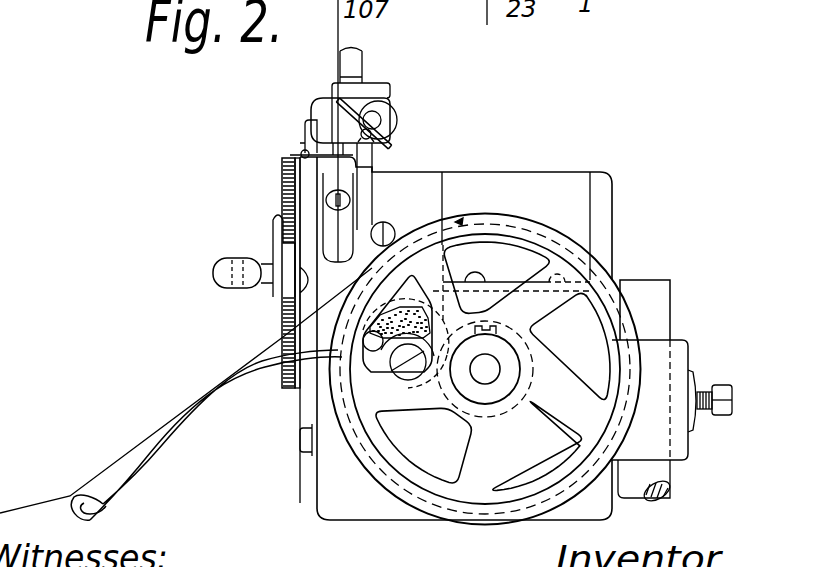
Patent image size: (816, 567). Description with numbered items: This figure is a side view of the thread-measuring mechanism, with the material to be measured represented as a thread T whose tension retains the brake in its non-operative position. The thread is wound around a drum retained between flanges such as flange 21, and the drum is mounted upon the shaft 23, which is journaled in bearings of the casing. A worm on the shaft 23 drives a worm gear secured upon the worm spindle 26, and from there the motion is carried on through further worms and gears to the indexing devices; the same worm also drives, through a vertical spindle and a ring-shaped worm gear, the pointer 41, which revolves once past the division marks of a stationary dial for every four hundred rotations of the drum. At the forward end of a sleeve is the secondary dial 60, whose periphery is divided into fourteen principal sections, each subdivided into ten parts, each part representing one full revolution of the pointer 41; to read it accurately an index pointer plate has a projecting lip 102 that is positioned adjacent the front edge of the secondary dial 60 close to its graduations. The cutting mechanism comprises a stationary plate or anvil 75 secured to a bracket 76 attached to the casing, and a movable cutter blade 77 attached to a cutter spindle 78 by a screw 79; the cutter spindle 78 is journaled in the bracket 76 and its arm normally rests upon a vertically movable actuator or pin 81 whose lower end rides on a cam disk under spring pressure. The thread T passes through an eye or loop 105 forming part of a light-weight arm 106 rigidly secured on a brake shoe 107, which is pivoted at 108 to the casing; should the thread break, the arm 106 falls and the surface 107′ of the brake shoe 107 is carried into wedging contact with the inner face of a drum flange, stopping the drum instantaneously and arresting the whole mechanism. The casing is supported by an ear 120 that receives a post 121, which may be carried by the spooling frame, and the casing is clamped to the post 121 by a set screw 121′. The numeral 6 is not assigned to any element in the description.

The frame 6 is at (481, 39).
The drum flange 21 is at (540, 285).
The shaft 23 is at (525, 356).
The worm spindle 26 is at (301, 438).
The pointer 41 is at (266, 240).
The secondary dial 60 is at (282, 172).
The stationary plate or anvil 75 is at (322, 111).
The bracket 76 is at (397, 118).
The movable cutter blade 77 is at (350, 108).
The cutter spindle 78 is at (381, 115).
The screw 79 is at (392, 134).
The actuator or pin 81 is at (300, 135).
The projecting lip 102 is at (297, 153).
The eye or loop 105 is at (67, 493).
The light-weight arm 106 is at (146, 463).
The brake shoe 107 is at (400, 356).
The surface of the brake shoe 107′ is at (398, 297).
The pivot 108 is at (402, 364).
The ear 120 is at (676, 348).
The post 121 is at (653, 303).
The set screw 121′ is at (730, 375).
The thread T is at (106, 465).